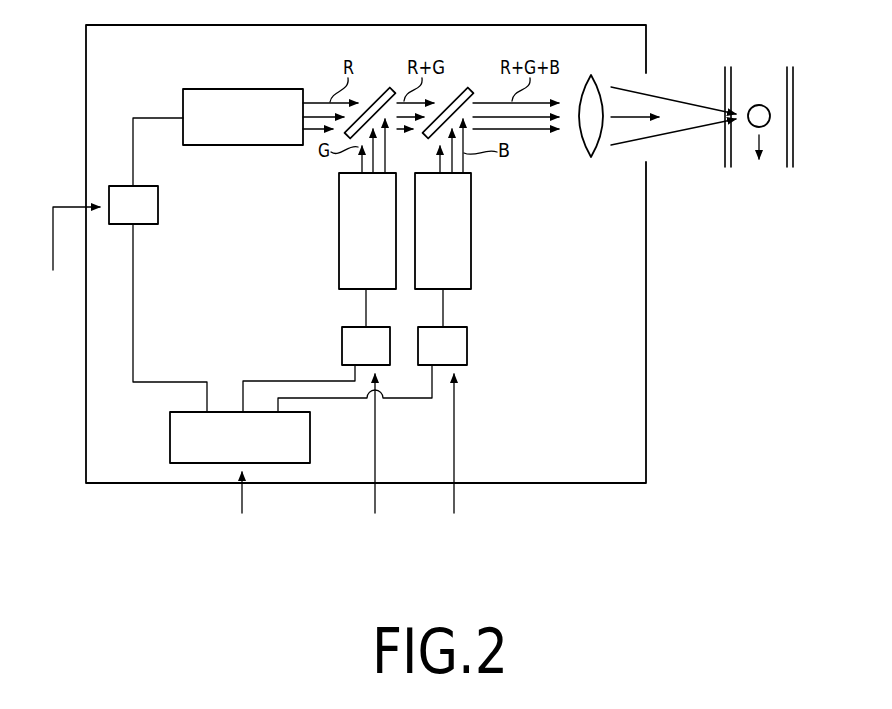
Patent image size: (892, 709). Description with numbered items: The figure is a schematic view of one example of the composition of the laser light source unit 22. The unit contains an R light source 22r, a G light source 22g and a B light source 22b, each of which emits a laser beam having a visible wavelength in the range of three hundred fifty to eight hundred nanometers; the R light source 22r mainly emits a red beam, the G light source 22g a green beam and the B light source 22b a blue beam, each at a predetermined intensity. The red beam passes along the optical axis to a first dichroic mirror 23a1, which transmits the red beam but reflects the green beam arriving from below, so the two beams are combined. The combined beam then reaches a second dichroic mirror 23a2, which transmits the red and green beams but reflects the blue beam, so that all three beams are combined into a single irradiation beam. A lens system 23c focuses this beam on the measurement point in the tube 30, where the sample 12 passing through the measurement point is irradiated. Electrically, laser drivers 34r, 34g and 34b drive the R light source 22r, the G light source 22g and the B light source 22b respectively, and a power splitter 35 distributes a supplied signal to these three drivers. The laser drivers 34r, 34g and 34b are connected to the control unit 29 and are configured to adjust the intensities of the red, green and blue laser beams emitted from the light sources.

The laser light source unit 22 is at (646, 277).
The R light source 22r is at (247, 88).
The G light source 22g is at (338, 226).
The B light source 22b is at (472, 227).
The dichroic mirror 23a1 is at (373, 87).
The dichroic mirror 23a2 is at (450, 87).
The lens system 23c is at (578, 148).
The sample 12 is at (760, 105).
The tube 30 is at (725, 160).
The laser driver 34r is at (150, 224).
The laser driver 34g is at (342, 345).
The laser driver 34b is at (467, 345).
The power splitter 35 is at (170, 437).
The control unit 29 is at (254, 375).